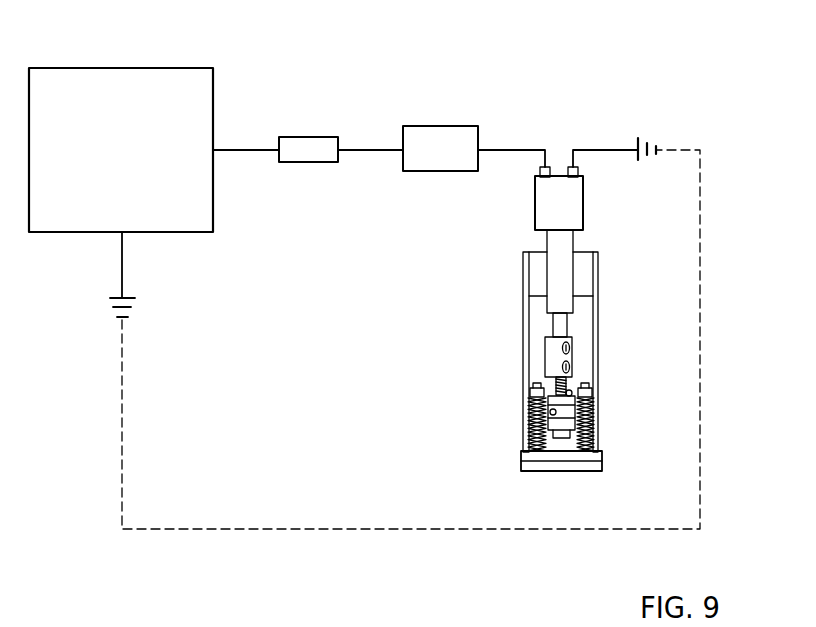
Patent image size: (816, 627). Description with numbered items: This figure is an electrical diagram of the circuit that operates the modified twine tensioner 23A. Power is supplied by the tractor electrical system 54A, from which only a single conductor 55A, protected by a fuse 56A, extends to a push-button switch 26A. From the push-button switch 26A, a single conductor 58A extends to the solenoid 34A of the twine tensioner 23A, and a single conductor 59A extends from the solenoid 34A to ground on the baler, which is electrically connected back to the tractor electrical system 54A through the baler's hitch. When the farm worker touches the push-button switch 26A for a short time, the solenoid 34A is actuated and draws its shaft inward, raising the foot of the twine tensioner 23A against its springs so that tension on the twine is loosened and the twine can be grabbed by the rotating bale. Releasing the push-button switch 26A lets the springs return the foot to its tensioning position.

The tractor electrical system 54A is at (127, 68).
The single conductor 55A is at (250, 147).
The fuse 56A is at (311, 137).
The push-button switch 26A is at (430, 126).
The single conductor 58A is at (516, 150).
The single conductor 59A is at (620, 150).
The solenoid 34A is at (583, 197).
The modified twine tensioner 23A is at (497, 293).